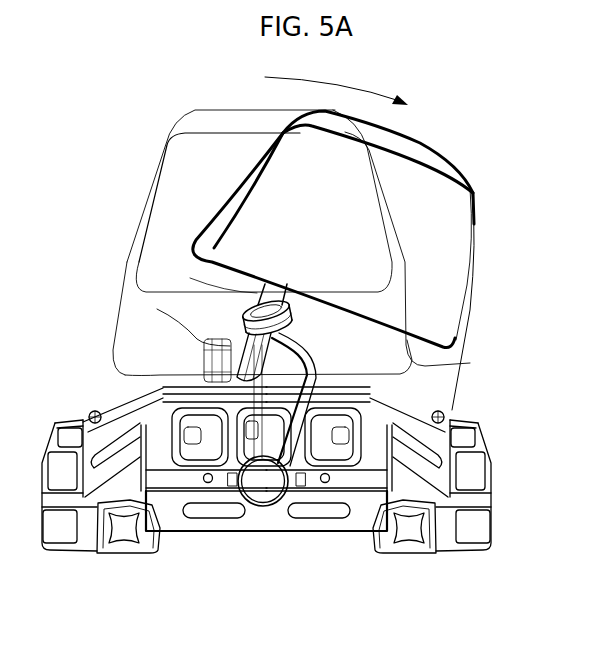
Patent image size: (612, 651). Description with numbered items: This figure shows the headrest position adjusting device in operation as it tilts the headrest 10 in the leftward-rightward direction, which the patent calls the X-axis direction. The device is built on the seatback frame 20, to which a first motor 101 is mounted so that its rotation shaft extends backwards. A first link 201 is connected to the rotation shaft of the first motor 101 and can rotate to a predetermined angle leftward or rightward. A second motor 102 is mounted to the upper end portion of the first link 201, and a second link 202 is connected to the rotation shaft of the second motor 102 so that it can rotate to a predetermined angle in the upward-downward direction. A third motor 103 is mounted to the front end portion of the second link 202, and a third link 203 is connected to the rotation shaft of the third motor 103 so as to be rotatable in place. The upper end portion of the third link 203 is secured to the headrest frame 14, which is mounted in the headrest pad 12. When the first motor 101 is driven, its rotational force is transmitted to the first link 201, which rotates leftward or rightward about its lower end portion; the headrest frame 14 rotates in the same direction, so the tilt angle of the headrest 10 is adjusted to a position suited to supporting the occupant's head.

The headrest 10 is at (458, 139).
The headrest pad 12 is at (474, 290).
The headrest frame 14 is at (440, 363).
The seatback frame 20 is at (455, 410).
The first motor 101 is at (285, 493).
The second motor 102 is at (207, 375).
The third motor 103 is at (240, 324).
The first link 201 is at (256, 503).
The second link 202 is at (232, 362).
The third link 203 is at (257, 291).